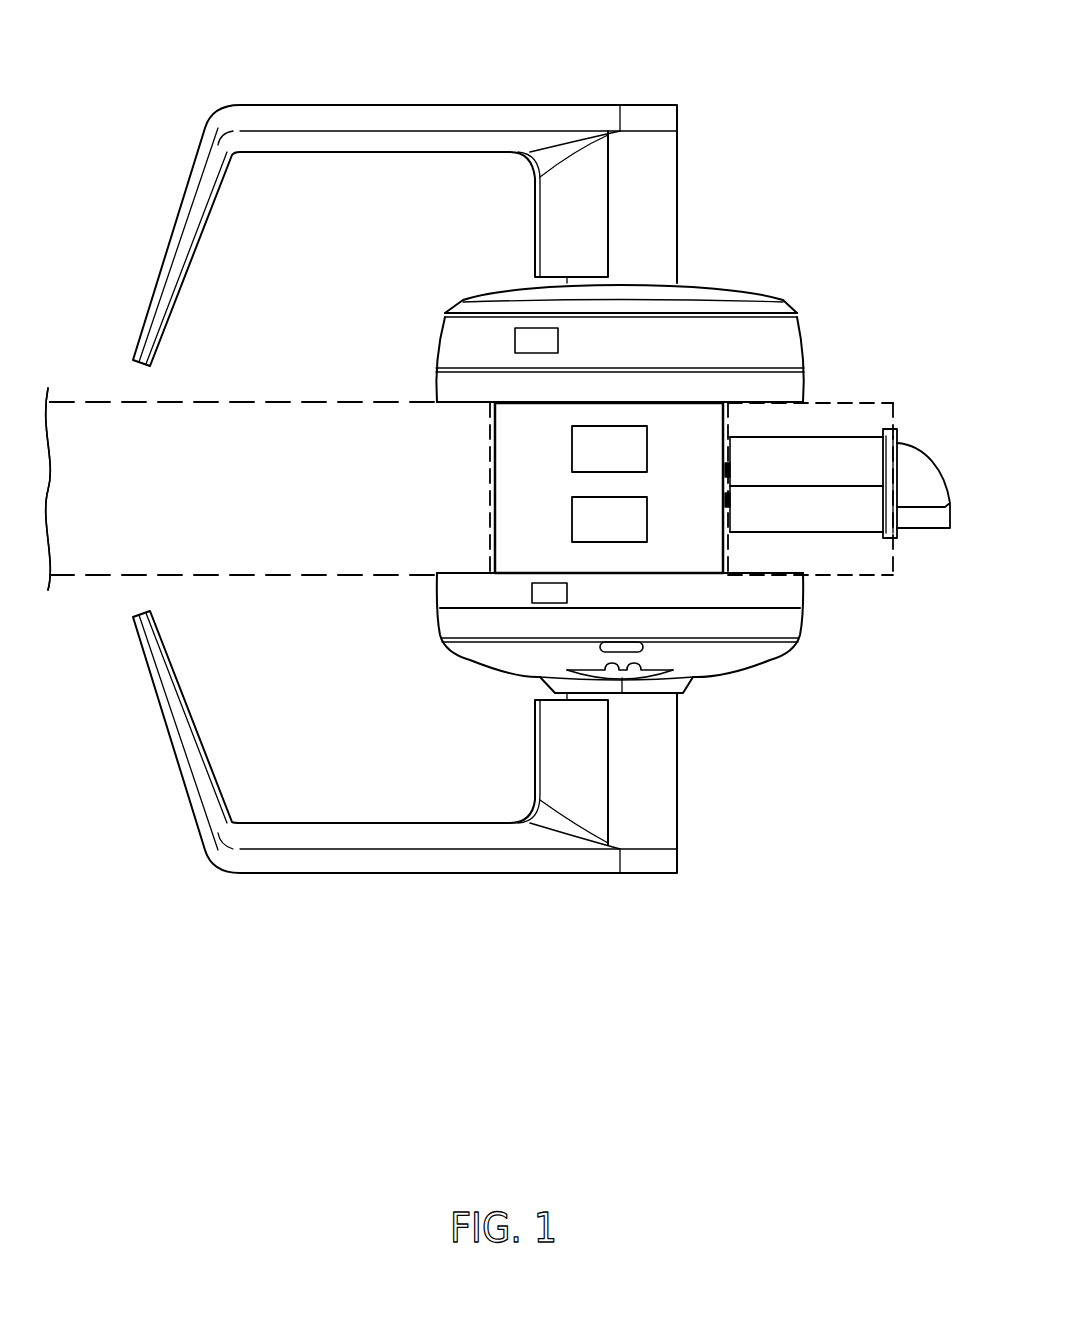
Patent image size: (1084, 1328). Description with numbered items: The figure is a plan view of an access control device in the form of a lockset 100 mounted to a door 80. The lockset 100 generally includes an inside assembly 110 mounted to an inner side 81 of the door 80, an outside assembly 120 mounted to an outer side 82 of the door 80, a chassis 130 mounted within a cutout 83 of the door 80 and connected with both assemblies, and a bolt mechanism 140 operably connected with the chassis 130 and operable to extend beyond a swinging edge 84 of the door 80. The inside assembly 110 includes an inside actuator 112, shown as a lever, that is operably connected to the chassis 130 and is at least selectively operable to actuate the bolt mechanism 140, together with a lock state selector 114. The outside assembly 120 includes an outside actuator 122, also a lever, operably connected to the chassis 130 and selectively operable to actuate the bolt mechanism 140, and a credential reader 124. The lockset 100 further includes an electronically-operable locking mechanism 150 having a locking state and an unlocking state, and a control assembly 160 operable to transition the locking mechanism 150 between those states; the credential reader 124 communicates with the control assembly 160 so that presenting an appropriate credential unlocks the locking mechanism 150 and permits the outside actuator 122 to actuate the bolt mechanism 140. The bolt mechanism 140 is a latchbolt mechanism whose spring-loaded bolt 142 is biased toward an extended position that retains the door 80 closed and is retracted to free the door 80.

The lockset 100 is at (137, 52).
The door 80 is at (104, 418).
The inner side 81 is at (362, 400).
The outer side 82 is at (365, 578).
The cutout 83 is at (490, 510).
The swinging edge 84 is at (897, 410).
The inside assembly 110 is at (846, 165).
The inside actuator 112 is at (677, 160).
The lock state selector 114 is at (558, 338).
The outside assembly 120 is at (846, 675).
The outside actuator 122 is at (677, 770).
The credential reader 124 is at (567, 593).
The chassis 130 is at (487, 452).
The bolt mechanism 140 is at (846, 420).
The bolt 142 is at (943, 480).
The locking mechanism 150 is at (647, 450).
The control assembly 160 is at (647, 515).